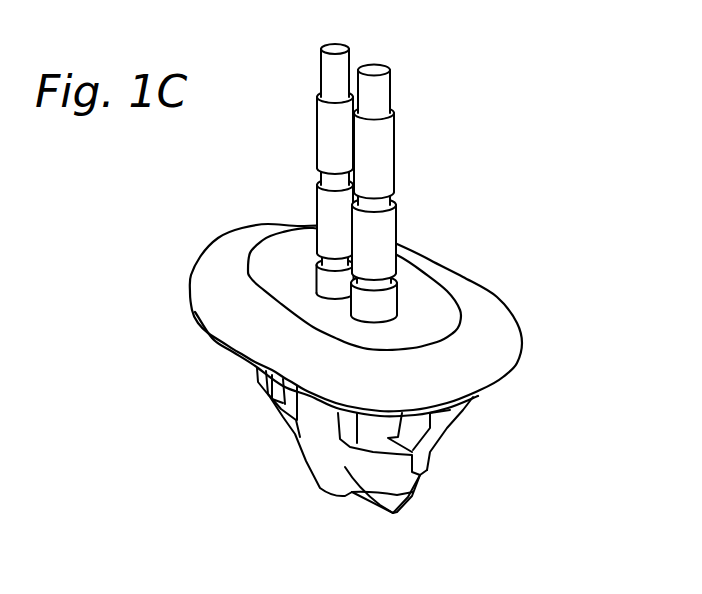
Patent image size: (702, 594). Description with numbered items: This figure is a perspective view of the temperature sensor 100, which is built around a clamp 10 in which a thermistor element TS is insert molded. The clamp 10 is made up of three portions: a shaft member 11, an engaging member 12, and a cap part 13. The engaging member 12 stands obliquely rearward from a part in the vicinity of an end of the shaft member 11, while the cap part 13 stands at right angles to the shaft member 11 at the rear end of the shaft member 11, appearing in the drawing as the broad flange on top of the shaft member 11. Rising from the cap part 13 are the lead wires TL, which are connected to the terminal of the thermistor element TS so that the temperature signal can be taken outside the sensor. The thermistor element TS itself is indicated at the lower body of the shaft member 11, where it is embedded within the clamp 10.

The temperature sensor 100 is at (403, 286).
The clamp 10 is at (403, 357).
The cap part 13 is at (503, 325).
The engaging member 12 is at (450, 413).
The shaft member 11 is at (418, 497).
The lead wire TL is at (380, 94).
The thermistor element TS is at (330, 472).